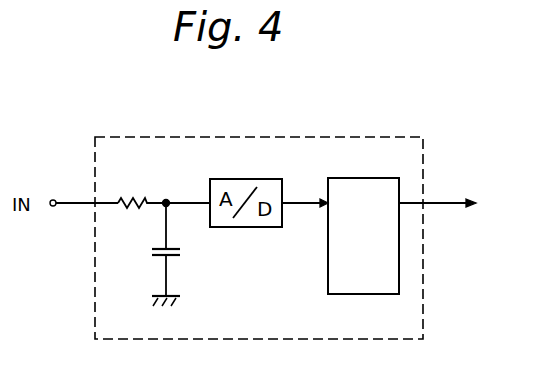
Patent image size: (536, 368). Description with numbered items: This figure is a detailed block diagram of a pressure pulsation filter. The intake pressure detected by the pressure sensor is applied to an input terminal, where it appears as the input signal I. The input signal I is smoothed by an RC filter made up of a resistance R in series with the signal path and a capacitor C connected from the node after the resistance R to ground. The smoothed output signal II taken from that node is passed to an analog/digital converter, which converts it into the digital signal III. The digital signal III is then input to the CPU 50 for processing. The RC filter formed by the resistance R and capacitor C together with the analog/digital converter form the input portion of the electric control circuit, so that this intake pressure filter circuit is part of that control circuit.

The input signal I is at (65, 196).
The output signal II is at (186, 197).
The digital signal III is at (298, 197).
The resistance R is at (136, 197).
The capacitor C is at (182, 252).
The CPU 50 is at (350, 178).